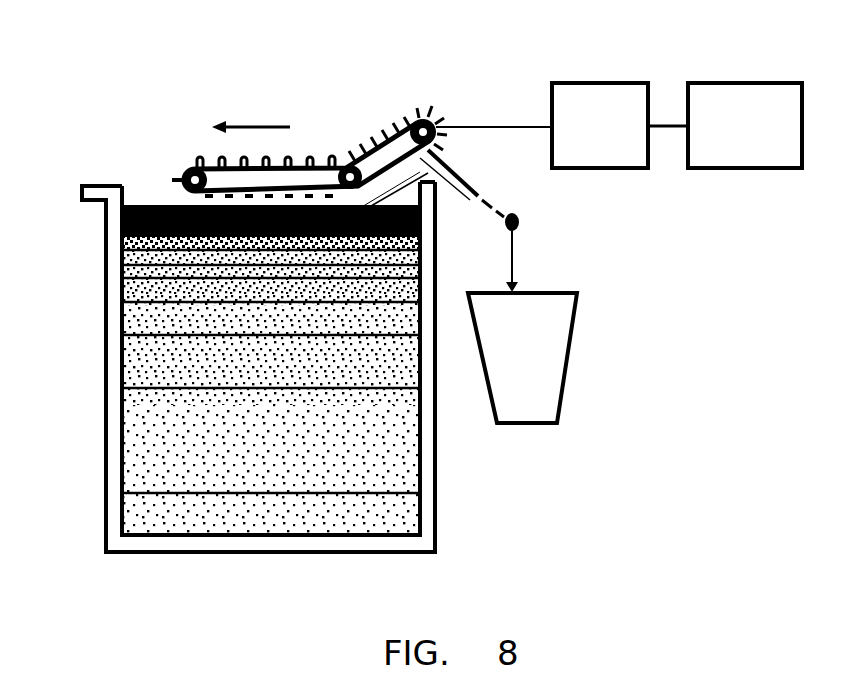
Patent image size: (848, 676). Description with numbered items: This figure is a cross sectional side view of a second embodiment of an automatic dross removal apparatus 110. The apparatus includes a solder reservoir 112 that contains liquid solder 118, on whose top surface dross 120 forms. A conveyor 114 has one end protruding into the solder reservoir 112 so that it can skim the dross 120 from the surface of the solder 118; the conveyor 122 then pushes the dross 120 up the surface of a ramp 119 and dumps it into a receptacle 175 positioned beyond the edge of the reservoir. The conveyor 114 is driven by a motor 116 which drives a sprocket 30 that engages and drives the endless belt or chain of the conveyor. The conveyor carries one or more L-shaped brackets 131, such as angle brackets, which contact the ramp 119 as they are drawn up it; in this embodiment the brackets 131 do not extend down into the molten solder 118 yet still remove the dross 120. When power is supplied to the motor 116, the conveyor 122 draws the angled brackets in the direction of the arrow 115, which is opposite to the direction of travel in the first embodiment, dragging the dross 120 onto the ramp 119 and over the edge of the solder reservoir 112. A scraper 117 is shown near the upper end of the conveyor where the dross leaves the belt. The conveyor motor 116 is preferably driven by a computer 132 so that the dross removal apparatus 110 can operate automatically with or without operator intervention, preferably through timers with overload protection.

The automatic dross removal apparatus 110 is at (136, 115).
The solder reservoir 112 is at (102, 312).
The conveyor 114 is at (305, 110).
The arrow 115 is at (258, 126).
The motor 116 is at (600, 83).
The scraper 117 is at (462, 180).
The liquid solder 118 is at (138, 373).
The ramp 119 is at (438, 198).
The dross 120 is at (146, 202).
The conveyor 122 is at (355, 84).
The L-shaped brackets 131 is at (172, 166).
The computer 132 is at (733, 83).
The sprocket 30 is at (438, 112).
The receptacle 175 is at (557, 342).